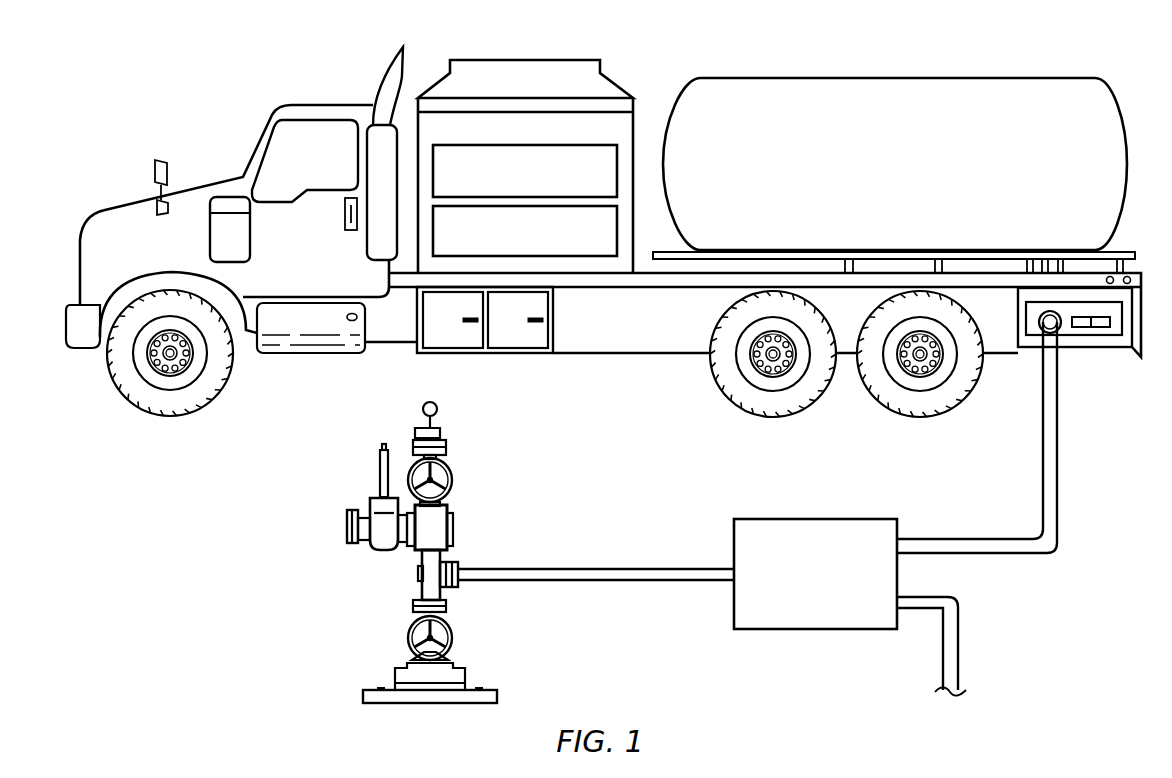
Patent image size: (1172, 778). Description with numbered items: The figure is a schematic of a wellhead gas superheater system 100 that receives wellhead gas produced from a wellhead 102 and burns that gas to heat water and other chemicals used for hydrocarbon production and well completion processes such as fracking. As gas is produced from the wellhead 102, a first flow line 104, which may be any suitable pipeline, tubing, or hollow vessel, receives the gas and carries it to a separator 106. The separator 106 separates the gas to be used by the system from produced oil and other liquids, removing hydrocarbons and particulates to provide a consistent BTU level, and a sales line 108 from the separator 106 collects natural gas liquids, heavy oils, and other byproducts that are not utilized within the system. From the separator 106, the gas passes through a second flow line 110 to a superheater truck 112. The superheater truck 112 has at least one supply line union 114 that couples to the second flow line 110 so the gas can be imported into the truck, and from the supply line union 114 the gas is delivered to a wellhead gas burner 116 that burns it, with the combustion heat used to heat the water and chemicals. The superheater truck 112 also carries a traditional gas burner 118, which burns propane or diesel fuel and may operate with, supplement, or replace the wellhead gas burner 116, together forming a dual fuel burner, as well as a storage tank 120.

The wellhead gas superheater system 100 is at (140, 42).
The wellhead 102 is at (449, 524).
The first flow line 104 is at (612, 569).
The separator 106 is at (815, 574).
The sales line 108 is at (958, 646).
The second flow line 110 is at (1057, 422).
The superheater truck 112 is at (327, 102).
The supply line union 114 is at (1058, 327).
The wellhead gas burner 116 is at (525, 171).
The traditional gas burner 118 is at (525, 231).
The storage tank 120 is at (894, 175).